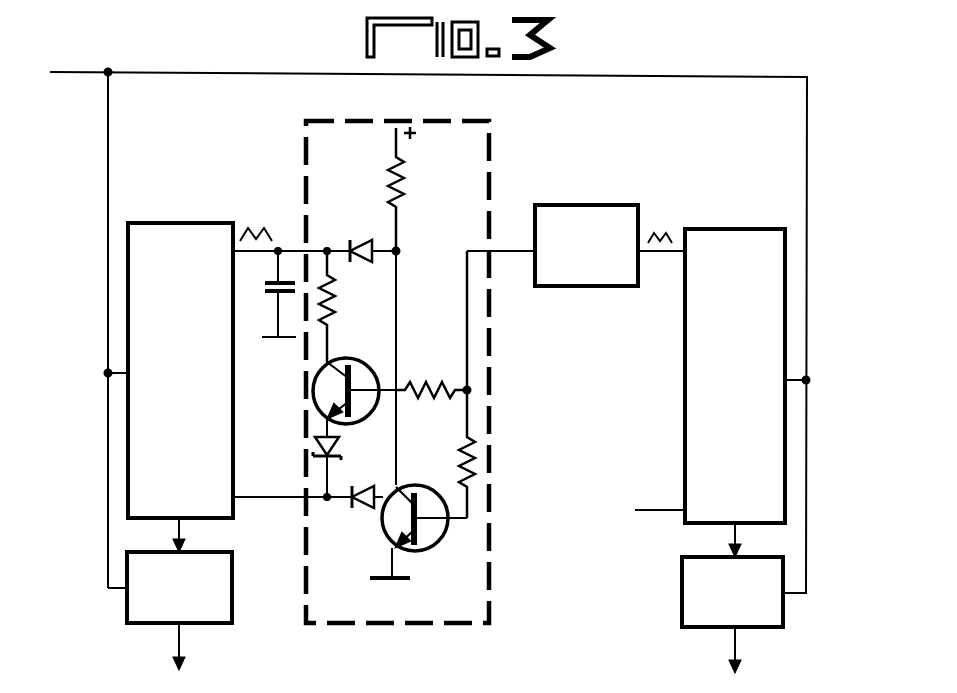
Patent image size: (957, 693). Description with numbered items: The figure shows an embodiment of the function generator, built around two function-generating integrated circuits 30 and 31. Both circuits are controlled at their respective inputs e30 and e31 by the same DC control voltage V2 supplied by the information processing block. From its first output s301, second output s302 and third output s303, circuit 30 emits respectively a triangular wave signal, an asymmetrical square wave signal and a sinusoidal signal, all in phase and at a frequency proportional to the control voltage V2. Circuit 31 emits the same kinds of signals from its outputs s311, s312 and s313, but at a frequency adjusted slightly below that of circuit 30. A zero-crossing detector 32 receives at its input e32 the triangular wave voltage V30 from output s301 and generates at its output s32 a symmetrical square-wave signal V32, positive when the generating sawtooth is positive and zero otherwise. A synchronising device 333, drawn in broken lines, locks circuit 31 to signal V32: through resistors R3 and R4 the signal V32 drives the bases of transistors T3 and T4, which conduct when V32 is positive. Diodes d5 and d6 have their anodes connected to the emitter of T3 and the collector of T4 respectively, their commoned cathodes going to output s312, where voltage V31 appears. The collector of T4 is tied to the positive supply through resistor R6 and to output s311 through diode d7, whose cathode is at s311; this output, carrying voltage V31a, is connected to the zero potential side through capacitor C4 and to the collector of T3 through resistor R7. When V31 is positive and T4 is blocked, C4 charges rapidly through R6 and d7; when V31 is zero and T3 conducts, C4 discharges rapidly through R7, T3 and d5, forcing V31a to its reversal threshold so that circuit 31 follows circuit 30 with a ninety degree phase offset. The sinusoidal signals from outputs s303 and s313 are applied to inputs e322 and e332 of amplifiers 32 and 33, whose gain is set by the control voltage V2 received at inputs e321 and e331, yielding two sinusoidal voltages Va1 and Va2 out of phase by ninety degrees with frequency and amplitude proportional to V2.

The function-generating integrated circuit 31 is at (159, 223).
The zero-crossing detector 32 is at (571, 205).
The function-generating integrated circuit 30 is at (742, 220).
The amplifier 33 is at (232, 578).
The synchronising device 333 is at (350, 121).
The capacitor C4 is at (276, 286).
The diode d5 is at (340, 448).
The diode d6 is at (355, 510).
The diode d7 is at (362, 242).
The resistor R3 is at (450, 380).
The resistor R4 is at (456, 458).
The resistor R6 is at (406, 182).
The resistor R7 is at (338, 292).
The transistor T3 is at (344, 367).
The transistor T4 is at (446, 536).
The DC control voltage V2 is at (96, 82).
The voltage at output s301 V30 is at (666, 230).
The voltage at output s312 V31 is at (246, 505).
The voltage at output s311 V31a is at (246, 230).
The zero-crossing detector output signal V32 is at (498, 232).
The sinusoidal output voltage Va1 is at (769, 650).
The sinusoidal output voltage Va2 is at (140, 638).
The first output of circuit 31 s311 is at (254, 247).
The second output of circuit 31 s312 is at (258, 486).
The third output of circuit 31 s313 is at (140, 536).
The input of circuit 31 e31 is at (143, 379).
The input of amplifier 33 e331 is at (159, 599).
The input of amplifier 33 e332 is at (180, 575).
The output of zero-crossing detector s32 is at (561, 249).
The input of zero-crossing detector e32 is at (638, 249).
The first output of circuit 30 s301 is at (723, 259).
The second output of circuit 30 s302 is at (636, 495).
The third output of circuit 30 s303 is at (769, 536).
The input of circuit 30 e30 is at (767, 385).
The input of amplifier 32 e321 is at (761, 612).
The input of amplifier 32 e322 is at (728, 584).